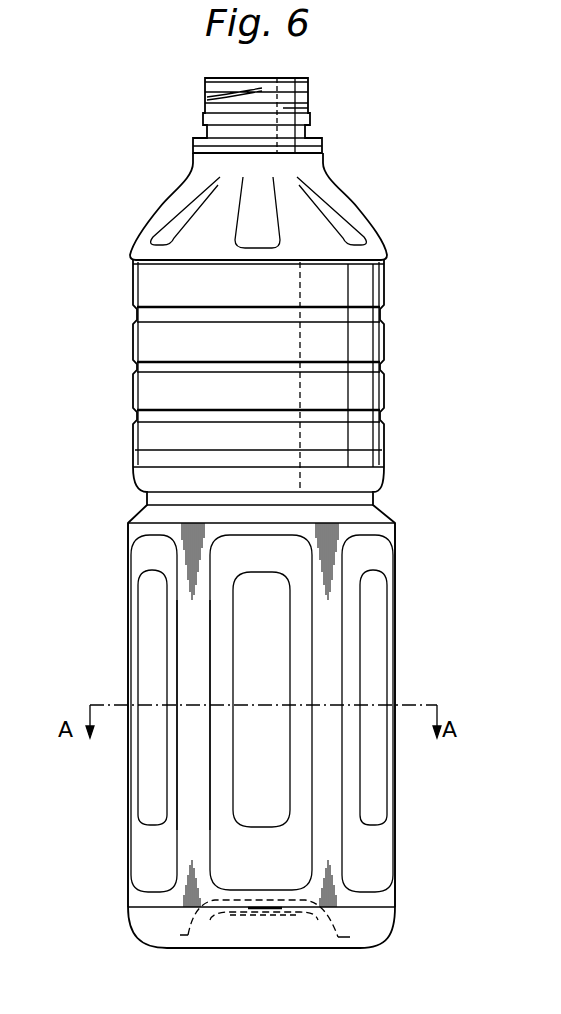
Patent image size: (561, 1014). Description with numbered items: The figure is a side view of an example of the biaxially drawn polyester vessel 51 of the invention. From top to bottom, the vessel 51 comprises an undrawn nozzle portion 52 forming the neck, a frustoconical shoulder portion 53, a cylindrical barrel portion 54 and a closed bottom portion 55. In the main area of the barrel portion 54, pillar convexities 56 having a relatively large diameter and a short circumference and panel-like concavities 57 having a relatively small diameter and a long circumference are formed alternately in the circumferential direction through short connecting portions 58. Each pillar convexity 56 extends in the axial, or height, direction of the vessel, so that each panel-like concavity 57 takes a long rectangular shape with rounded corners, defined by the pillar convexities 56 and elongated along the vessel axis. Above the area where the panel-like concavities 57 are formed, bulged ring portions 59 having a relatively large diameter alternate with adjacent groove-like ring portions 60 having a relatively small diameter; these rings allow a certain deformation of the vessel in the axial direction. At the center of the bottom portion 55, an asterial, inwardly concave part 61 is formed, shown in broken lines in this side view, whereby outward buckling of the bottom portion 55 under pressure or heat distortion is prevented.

The biaxially drawn polyester vessel 51 is at (400, 356).
The undrawn nozzle portion 52 is at (313, 120).
The frustoconical shoulder portion 53 is at (320, 225).
The cylindrical barrel portion 54 is at (126, 540).
The closed bottom portion 55 is at (165, 948).
The pillar convexity 56 is at (326, 676).
The panel-like concavity 57 is at (160, 790).
The short connecting portion 58 is at (218, 740).
The bulged ring portion 59 is at (362, 340).
The groove-like ring portion 60 is at (185, 367).
The asterial inwardly concave part 61 is at (320, 937).